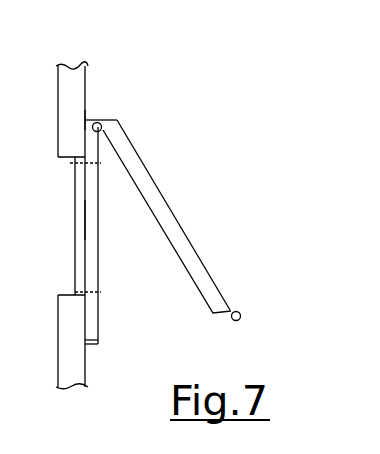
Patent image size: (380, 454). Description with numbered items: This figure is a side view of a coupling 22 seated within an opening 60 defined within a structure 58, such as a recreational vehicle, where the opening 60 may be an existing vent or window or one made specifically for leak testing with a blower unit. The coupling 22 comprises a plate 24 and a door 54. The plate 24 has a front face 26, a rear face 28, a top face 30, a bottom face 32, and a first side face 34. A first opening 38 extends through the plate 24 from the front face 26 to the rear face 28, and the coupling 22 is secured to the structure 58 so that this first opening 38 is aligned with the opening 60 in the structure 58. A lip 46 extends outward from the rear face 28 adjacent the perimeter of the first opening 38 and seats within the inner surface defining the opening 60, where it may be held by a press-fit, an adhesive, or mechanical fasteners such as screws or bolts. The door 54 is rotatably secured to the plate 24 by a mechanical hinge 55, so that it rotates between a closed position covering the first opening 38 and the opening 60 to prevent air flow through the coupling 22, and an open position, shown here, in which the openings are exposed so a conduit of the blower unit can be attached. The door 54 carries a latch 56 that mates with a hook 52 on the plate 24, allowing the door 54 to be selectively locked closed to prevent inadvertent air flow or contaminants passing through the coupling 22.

The coupling 22 is at (125, 122).
The plate 24 is at (100, 318).
The front face 26 is at (103, 281).
The rear face 28 is at (82, 220).
The top face 30 is at (93, 112).
The bottom face 32 is at (99, 350).
The first side face 34 is at (92, 186).
The first opening 38 is at (97, 173).
The lip 46 is at (82, 268).
The hook 52 is at (102, 343).
The door 54 is at (164, 208).
The mechanical hinge 55 is at (101, 118).
The latch 56 is at (236, 310).
The structure 58 is at (98, 82).
The opening 60 is at (70, 163).